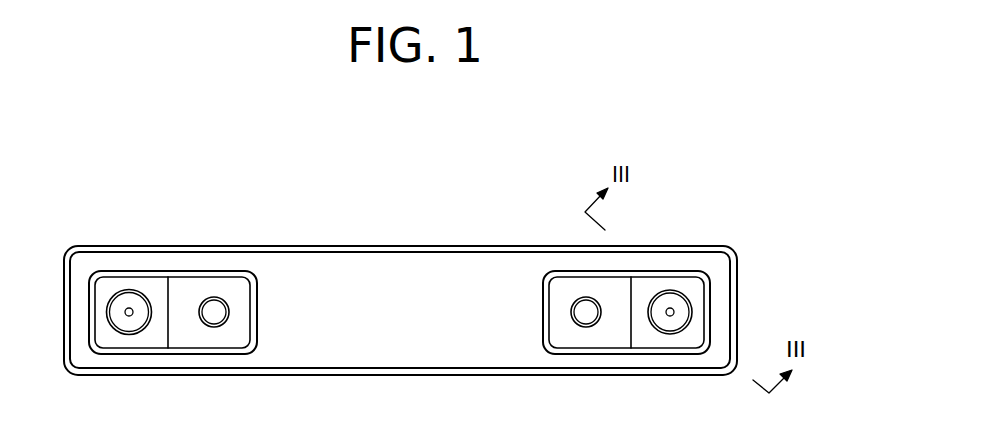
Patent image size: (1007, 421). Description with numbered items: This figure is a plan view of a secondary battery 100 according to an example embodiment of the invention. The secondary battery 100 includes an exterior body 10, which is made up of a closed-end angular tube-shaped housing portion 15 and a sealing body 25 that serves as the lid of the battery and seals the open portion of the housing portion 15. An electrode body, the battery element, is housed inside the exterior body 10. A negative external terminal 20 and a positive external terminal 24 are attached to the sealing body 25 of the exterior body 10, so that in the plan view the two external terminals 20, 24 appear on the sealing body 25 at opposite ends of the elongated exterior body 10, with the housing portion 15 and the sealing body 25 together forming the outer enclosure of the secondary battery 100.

The secondary battery 100 is at (284, 204).
The exterior body 10 is at (399, 252).
The housing portion 15 is at (378, 248).
The sealing body 25 is at (423, 268).
The negative external terminal 20 is at (214, 312).
The positive external terminal 24 is at (586, 312).